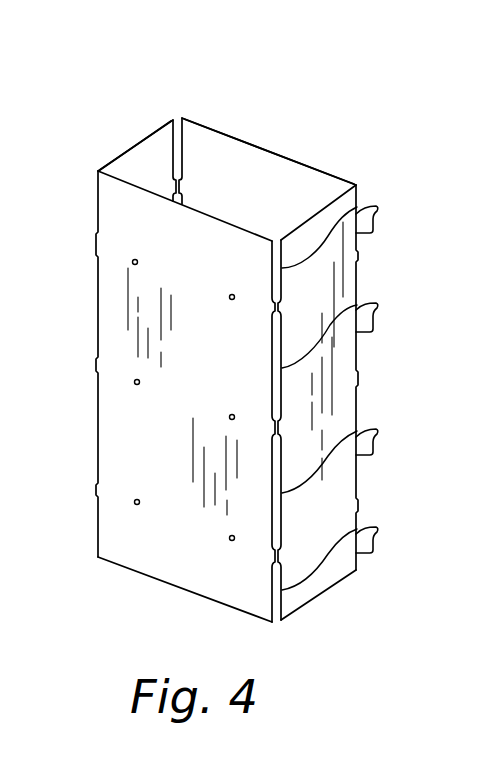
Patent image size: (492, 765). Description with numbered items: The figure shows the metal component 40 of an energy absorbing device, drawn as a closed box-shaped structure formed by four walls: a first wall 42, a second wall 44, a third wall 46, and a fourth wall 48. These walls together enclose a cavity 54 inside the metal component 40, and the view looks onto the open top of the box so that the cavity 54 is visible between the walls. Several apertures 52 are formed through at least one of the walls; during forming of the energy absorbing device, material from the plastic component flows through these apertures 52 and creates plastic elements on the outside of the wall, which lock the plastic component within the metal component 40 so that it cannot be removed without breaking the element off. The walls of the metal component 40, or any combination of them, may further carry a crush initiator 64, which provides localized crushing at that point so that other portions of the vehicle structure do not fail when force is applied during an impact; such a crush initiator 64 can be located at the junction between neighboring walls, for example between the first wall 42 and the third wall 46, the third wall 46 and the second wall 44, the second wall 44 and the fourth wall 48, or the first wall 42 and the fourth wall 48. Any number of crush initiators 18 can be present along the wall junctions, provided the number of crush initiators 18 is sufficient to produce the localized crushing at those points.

The crush initiators 18 is at (377, 206).
The metal component 40 is at (98, 420).
The first wall 42 is at (132, 143).
The second wall 44 is at (316, 384).
The third wall 46 is at (307, 165).
The fourth wall 48 is at (132, 208).
The apertures 52 is at (137, 379).
The cavity 54 is at (234, 171).
The crush initiator 64 is at (192, 527).